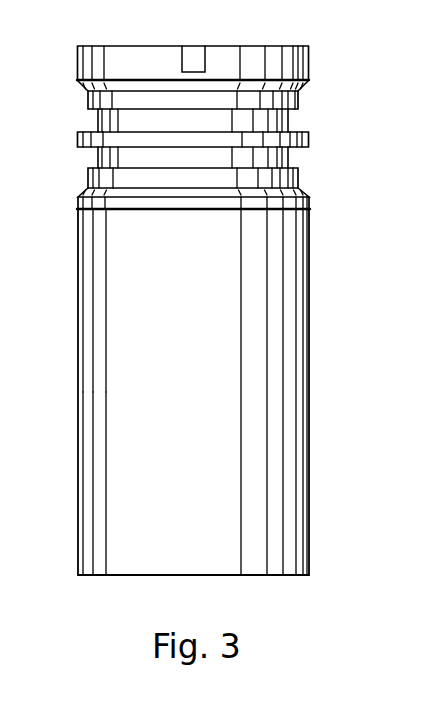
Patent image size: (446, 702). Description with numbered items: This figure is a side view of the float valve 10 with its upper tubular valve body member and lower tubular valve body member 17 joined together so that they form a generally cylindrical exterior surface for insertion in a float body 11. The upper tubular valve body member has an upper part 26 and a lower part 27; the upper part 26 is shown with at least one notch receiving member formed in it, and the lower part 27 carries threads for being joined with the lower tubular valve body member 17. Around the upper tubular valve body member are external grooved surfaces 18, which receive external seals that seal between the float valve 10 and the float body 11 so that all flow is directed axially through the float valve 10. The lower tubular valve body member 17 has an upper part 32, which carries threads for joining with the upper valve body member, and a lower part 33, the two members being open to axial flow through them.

The float valve 10 is at (219, 307).
The float body 11 is at (308, 59).
The lower tubular valve body member 17 is at (309, 352).
The grooved surfaces 18 is at (288, 121).
The upper part 26 is at (77, 64).
The lower part 27 is at (78, 203).
The upper part 32 is at (78, 229).
The lower part 33 is at (78, 510).